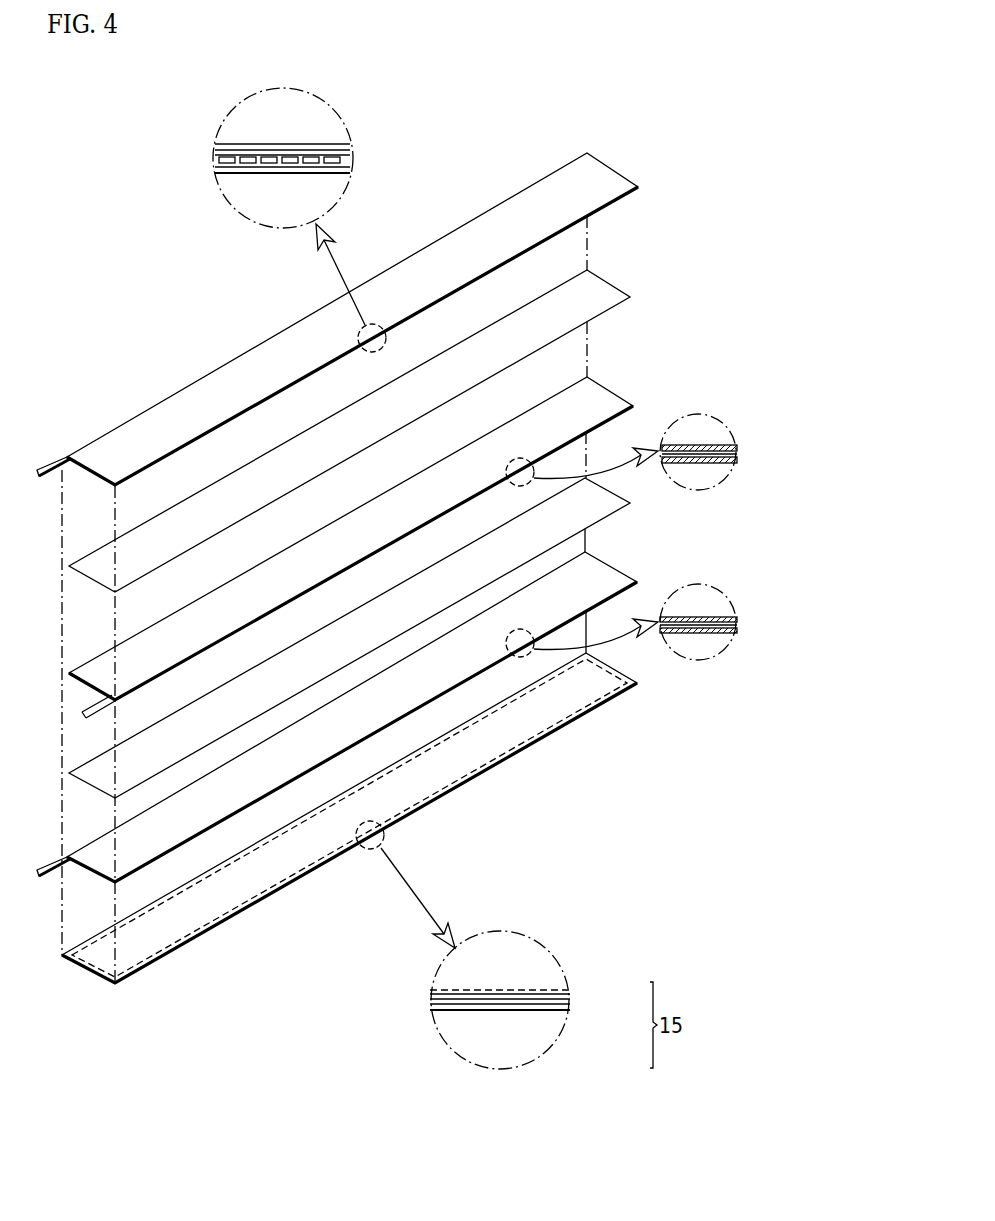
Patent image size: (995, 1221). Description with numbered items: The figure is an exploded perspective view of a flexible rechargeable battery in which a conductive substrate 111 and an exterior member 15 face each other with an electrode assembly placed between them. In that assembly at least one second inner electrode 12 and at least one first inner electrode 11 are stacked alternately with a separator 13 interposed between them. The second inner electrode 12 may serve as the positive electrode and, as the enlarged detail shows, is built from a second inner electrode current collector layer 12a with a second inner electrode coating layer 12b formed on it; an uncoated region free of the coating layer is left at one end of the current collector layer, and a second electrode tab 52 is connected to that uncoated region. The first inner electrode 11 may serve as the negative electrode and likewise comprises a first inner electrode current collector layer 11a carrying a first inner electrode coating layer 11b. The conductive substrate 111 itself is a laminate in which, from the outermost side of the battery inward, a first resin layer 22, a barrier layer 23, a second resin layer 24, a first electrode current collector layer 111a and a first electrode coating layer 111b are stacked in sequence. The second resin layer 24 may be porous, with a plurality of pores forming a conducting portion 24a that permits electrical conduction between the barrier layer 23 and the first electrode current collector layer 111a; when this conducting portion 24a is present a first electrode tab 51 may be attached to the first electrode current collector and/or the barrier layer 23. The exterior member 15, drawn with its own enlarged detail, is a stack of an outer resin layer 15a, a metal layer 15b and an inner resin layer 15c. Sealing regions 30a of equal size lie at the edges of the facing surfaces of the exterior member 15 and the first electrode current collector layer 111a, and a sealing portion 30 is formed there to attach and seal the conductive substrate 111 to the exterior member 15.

The conductive substrate 111 is at (621, 158).
The separator 13 is at (621, 278).
The second inner electrode 12 is at (621, 384).
The first inner electrode 11 is at (623, 559).
The exterior member 15 is at (388, 818).
The first electrode tab 51 is at (38, 470).
The second electrode tab 52 is at (82, 712).
The sealing portion 30 is at (553, 990).
The sealing region 30a is at (568, 722).
The outer resin layer 15a is at (570, 996).
The metal layer 15b is at (570, 1002).
The inner resin layer 15c is at (570, 1007).
The first resin layer 22 is at (218, 146).
The barrier layer 23 is at (218, 157).
The second resin layer 24 is at (264, 160).
The conducting portion 24a is at (227, 165).
The first electrode current collector layer 111a is at (352, 160).
The first electrode coating layer 111b is at (352, 170).
The second inner electrode current collector layer 12a is at (690, 454).
The second inner electrode coating layer 12b is at (722, 446).
The first inner electrode current collector layer 11a is at (690, 625).
The first inner electrode coating layer 11b is at (722, 617).